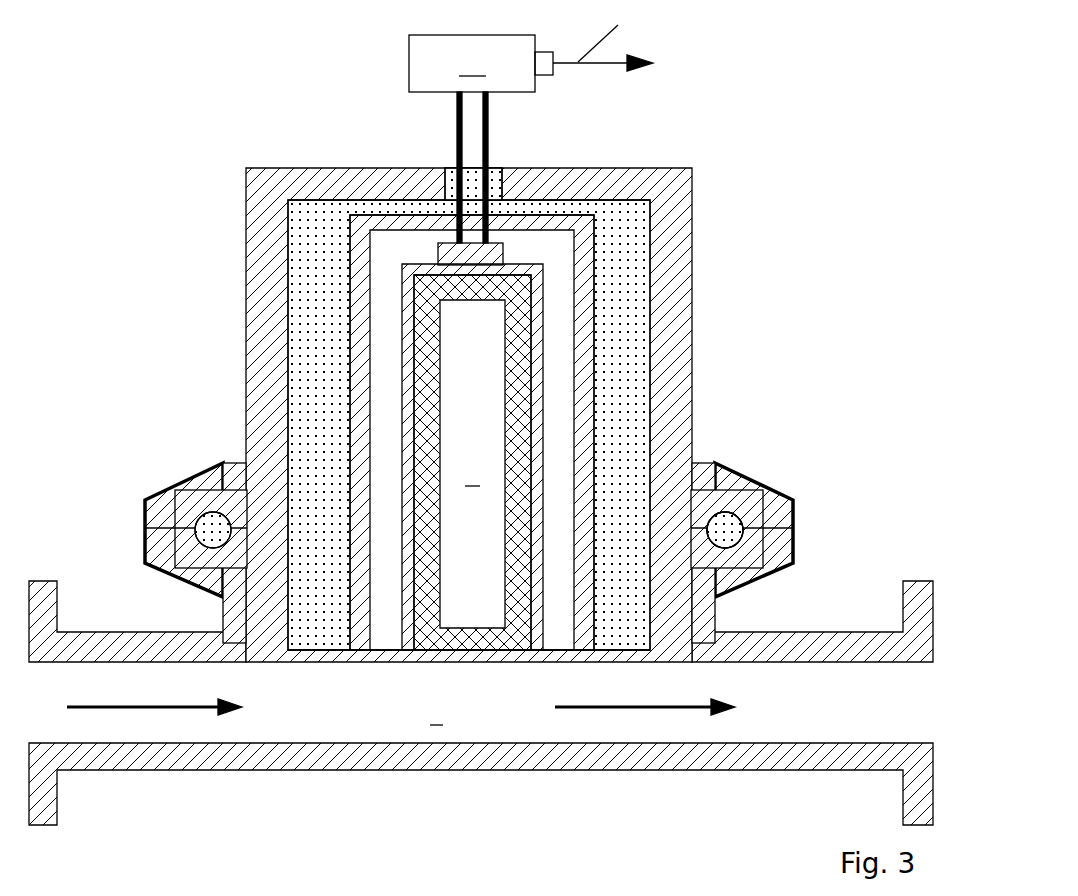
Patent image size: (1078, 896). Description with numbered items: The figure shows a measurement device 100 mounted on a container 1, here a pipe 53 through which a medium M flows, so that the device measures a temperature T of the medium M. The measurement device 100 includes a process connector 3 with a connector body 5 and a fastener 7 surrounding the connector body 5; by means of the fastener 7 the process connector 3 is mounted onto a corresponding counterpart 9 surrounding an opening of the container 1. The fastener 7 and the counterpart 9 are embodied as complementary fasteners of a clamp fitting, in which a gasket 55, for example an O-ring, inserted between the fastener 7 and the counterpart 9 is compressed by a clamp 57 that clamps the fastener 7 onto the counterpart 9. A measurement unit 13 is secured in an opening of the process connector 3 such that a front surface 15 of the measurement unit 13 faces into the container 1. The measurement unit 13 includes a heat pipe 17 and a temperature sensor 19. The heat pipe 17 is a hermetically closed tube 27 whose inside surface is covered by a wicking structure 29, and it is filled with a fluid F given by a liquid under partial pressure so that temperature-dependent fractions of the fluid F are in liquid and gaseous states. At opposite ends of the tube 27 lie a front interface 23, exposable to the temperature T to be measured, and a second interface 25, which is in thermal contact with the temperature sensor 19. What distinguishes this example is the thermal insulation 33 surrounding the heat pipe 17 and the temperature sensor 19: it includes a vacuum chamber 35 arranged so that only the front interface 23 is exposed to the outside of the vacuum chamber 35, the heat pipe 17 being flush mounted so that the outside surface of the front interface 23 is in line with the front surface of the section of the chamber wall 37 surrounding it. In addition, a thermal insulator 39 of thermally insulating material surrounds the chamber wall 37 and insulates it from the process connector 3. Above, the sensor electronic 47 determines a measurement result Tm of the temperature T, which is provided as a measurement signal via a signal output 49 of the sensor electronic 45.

The measurement device 100 is at (172, 111).
The container 1 is at (481, 789).
The pipe 53 is at (445, 762).
The front surface 15 is at (352, 660).
The medium M is at (158, 678).
The measurement unit 13 is at (479, 404).
The thermal insulation 33 is at (384, 425).
The vacuum chamber 35 is at (390, 405).
The chamber wall 37 is at (367, 440).
The thermal insulator 39 is at (327, 463).
The front interface 23 is at (458, 652).
The heat pipe 17 is at (443, 403).
The tube 27 is at (417, 300).
The wicking structure 29 is at (410, 345).
The second interface 25 is at (470, 268).
The temperature sensor 19 is at (485, 257).
The sensor electronic 45 is at (456, 148).
The sensor electronic 47 is at (472, 63).
The signal output 49 is at (542, 65).
The measurement result Tm is at (616, 37).
The fluid F is at (472, 464).
The temperature T is at (436, 715).
The process connector 3 is at (490, 510).
The connector body 5 is at (695, 452).
The fastener 7 is at (733, 512).
The counterpart 9 is at (730, 550).
The gasket 55 is at (210, 528).
The clamp 57 is at (785, 514).